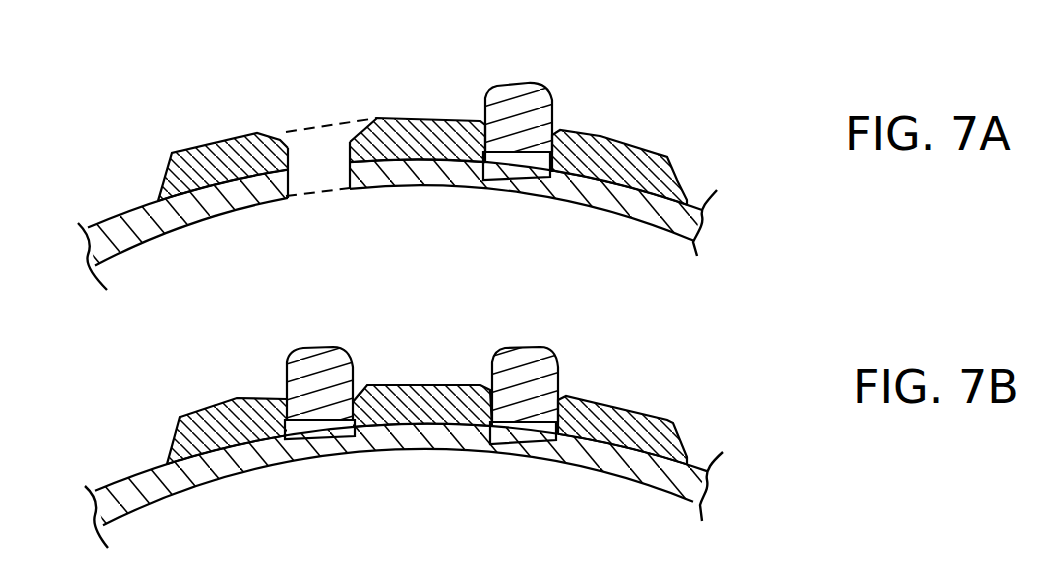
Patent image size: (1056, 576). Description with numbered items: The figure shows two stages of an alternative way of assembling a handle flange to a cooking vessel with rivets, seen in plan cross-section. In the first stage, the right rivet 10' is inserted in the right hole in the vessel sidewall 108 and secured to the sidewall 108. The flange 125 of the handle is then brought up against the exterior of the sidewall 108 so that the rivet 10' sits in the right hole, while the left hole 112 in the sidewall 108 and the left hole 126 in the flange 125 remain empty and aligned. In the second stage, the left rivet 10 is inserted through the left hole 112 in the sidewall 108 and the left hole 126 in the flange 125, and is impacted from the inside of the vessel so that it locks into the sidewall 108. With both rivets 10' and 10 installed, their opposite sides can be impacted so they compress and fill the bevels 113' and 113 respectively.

In FIG. 7A, the cooking vessel wall 108 is at (198, 208).
In FIG. 7B, the cooking vessel wall 108 is at (172, 478).
In FIG. 7A, the bevel 113 is at (216, 128).
In FIG. 7B, the bevel 113 is at (282, 370).
In FIG. 7A, the bevel 113' is at (567, 89).
In FIG. 7B, the bevel 113' is at (579, 356).
In FIG. 7A, the flange 125 is at (593, 164).
In FIG. 7B, the flange 125 is at (630, 434).
In FIG. 7A, the left hole in flange 126 is at (312, 143).
In FIG. 7A, the left hole in sidewall 112 is at (315, 168).
In FIG. 7B, the left rivet 10 is at (329, 479).
In FIG. 7A, the right rivet 10' is at (516, 219).
In FIG. 7B, the right rivet 10' is at (522, 475).